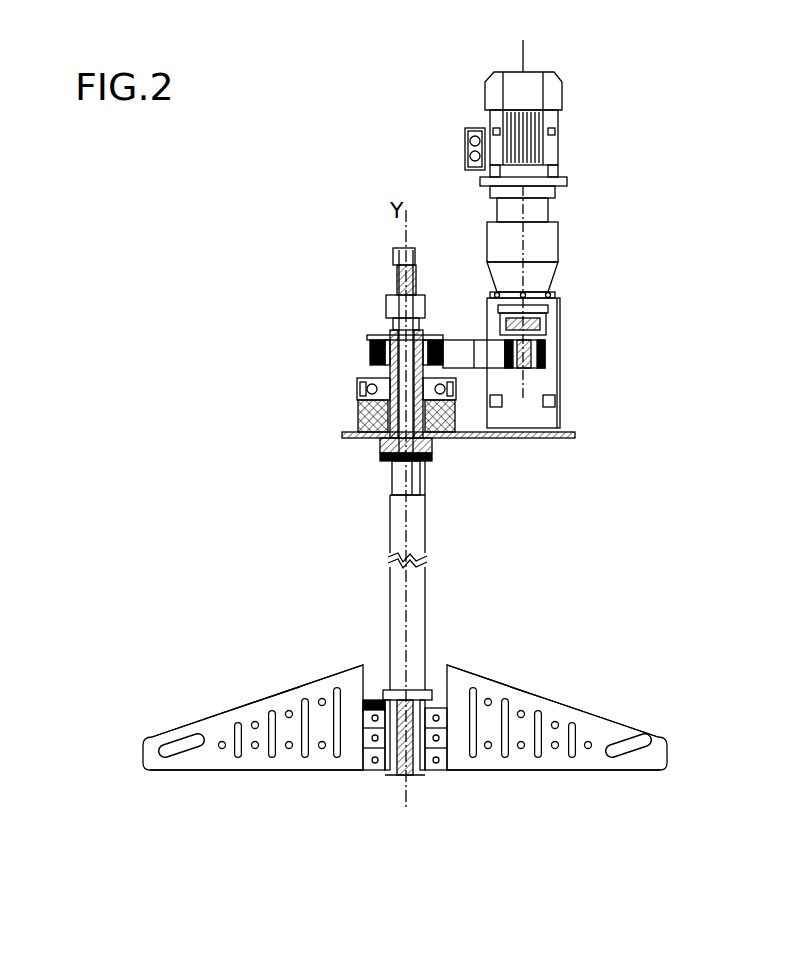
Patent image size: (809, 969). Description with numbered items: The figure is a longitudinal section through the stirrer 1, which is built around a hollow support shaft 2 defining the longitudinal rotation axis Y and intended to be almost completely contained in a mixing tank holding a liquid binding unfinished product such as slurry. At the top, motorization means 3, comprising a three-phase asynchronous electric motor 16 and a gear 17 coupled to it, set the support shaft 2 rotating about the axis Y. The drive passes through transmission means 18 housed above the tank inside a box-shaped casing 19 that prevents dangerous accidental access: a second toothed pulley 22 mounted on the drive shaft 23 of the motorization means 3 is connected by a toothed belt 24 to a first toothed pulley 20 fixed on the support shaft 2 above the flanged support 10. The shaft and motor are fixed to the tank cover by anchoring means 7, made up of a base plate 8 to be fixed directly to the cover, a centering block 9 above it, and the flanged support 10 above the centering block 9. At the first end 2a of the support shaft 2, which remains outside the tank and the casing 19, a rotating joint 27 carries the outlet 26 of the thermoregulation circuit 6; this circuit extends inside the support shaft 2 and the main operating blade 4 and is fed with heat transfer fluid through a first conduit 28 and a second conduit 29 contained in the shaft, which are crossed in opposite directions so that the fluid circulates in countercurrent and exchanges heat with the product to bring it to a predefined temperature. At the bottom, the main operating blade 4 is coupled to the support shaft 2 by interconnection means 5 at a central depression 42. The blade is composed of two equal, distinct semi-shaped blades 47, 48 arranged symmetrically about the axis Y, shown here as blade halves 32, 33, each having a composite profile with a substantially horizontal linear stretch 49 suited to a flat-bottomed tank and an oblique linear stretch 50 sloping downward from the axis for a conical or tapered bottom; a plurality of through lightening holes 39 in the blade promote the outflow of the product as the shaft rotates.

The stirrer 1 is at (230, 205).
The support shaft 2 is at (392, 528).
The first end 2a is at (430, 472).
The motorization means 3 is at (597, 165).
The main operating blade 4 is at (672, 688).
The interconnection means 5 is at (414, 783).
The thermoregulation circuit 6 is at (383, 466).
The anchoring means 7 is at (340, 435).
The base plate 8 is at (560, 443).
The centering block 9 is at (357, 410).
The flanged support 10 is at (360, 385).
The three-phase asynchronous electric motor 16 is at (535, 80).
The gear 17 is at (548, 245).
The transmission means 18 is at (478, 330).
The box-shaped casing 19 is at (560, 340).
The first toothed pulley 20 is at (380, 340).
The second toothed pulley 22 is at (540, 352).
The drive shaft 23 is at (548, 320).
The toothed belt 24 is at (474, 370).
The outlet 26 is at (390, 255).
The rotating joint 27 is at (412, 250).
The first conduit 28 is at (390, 486).
The second conduit 29 is at (414, 490).
The left blade 32 is at (220, 757).
The right blade 33 is at (585, 762).
The through lightening holes 39 is at (160, 750).
The central depression 42 is at (432, 665).
The semi-shaped blade 47 is at (195, 700).
The semi-shaped blade 48 is at (618, 697).
The substantially horizontal linear stretch 49 is at (270, 771).
The oblique linear stretch 50 is at (300, 690).